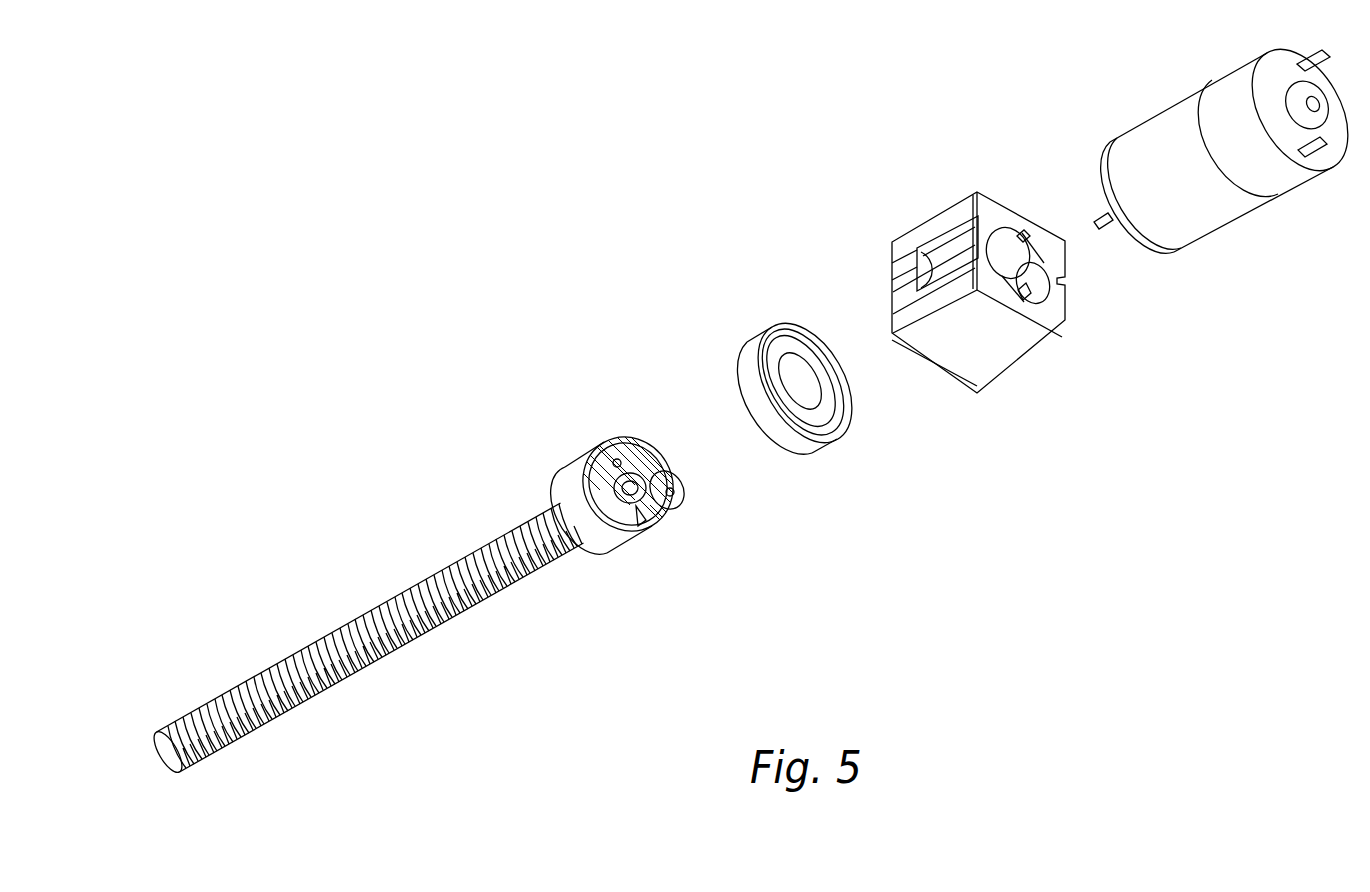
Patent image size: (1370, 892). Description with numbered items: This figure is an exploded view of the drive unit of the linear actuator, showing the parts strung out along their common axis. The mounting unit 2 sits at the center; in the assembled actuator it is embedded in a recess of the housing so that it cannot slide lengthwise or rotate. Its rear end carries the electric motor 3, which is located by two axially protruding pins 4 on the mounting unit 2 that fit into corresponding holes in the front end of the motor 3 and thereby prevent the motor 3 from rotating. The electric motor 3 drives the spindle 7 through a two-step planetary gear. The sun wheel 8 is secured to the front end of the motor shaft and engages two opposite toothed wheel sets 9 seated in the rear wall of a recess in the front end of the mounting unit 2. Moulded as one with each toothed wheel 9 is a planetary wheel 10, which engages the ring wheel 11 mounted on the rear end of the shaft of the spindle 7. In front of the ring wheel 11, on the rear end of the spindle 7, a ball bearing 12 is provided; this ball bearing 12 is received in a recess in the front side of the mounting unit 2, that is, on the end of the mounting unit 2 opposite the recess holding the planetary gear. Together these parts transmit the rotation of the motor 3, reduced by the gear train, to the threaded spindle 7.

The mounting unit 2 is at (996, 365).
The electric motor 3 is at (1222, 223).
The pins 4 is at (1022, 234).
The spindle 7 is at (380, 600).
The sun wheel 8 is at (630, 493).
The toothed wheel sets 9 is at (668, 488).
The planetary wheel 10 is at (643, 522).
The ring wheel 11 is at (582, 468).
The ball bearing 12 is at (806, 455).